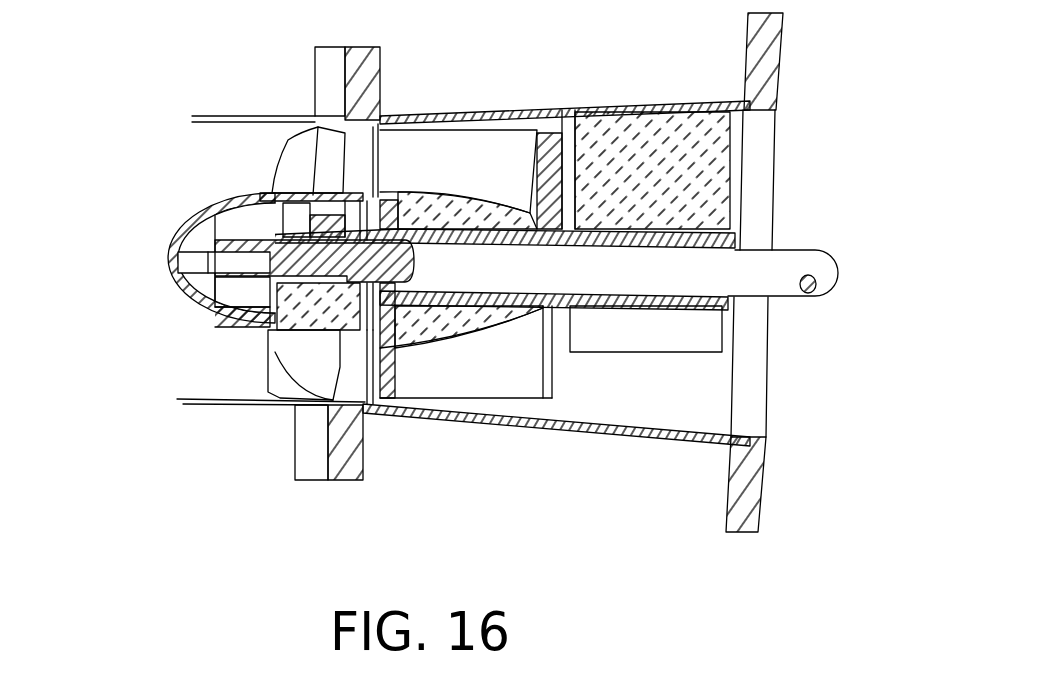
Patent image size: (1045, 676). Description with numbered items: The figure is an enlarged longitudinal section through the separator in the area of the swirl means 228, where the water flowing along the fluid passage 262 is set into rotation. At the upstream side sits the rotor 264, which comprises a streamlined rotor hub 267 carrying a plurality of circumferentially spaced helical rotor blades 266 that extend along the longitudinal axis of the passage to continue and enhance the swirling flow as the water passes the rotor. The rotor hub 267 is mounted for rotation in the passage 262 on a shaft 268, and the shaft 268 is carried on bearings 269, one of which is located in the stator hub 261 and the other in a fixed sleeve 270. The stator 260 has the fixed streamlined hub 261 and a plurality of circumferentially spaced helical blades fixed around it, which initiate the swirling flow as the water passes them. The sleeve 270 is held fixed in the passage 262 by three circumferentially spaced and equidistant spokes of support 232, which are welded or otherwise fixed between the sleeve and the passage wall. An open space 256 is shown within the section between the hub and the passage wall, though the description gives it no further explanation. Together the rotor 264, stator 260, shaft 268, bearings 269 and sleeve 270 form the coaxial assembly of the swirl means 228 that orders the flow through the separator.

The swirl means 228 is at (245, 427).
The spokes of support 232 is at (690, 117).
The cavity 256 is at (460, 150).
The stator 260 is at (540, 130).
The stator hub 261 is at (445, 405).
The passage 262 is at (400, 420).
The rotor 264 is at (190, 307).
The rotor blades 266 is at (333, 153).
The rotor hub 267 is at (227, 203).
The shaft 268 is at (783, 253).
The bearings 269 is at (468, 292).
The sleeve 270 is at (700, 337).